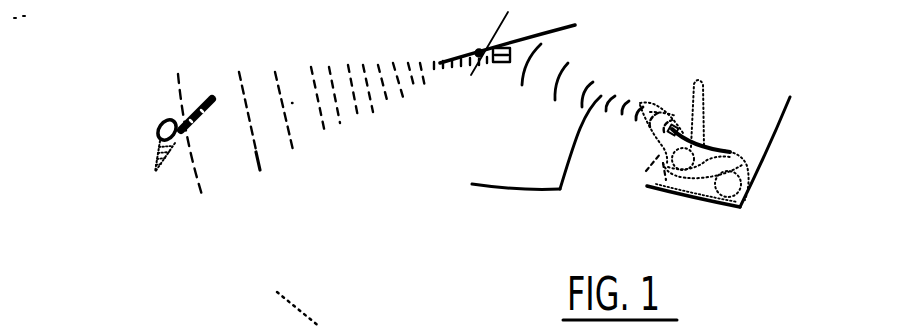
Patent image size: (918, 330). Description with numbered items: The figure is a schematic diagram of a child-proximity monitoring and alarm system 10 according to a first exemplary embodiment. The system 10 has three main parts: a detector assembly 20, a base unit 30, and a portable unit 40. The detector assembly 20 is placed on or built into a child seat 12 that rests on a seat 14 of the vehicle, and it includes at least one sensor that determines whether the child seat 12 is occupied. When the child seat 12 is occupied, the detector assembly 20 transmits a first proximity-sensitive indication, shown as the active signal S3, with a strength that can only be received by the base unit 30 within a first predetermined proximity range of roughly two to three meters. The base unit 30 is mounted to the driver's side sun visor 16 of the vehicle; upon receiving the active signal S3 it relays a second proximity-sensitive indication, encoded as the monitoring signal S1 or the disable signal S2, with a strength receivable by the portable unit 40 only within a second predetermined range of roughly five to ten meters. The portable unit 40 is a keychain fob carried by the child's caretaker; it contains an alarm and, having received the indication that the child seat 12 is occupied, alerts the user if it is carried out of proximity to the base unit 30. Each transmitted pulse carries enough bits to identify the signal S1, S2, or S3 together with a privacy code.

The system 10 is at (657, 44).
The child seat 12 is at (644, 168).
The seat 14 is at (763, 137).
The driver's side sun visor 16 is at (498, 45).
The detector assembly 20 is at (708, 146).
The base unit 30 is at (500, 67).
The portable unit 40 is at (187, 103).
The monitoring signal S1 is at (264, 172).
The disable signal S2 is at (368, 126).
The active signal S3 is at (561, 111).